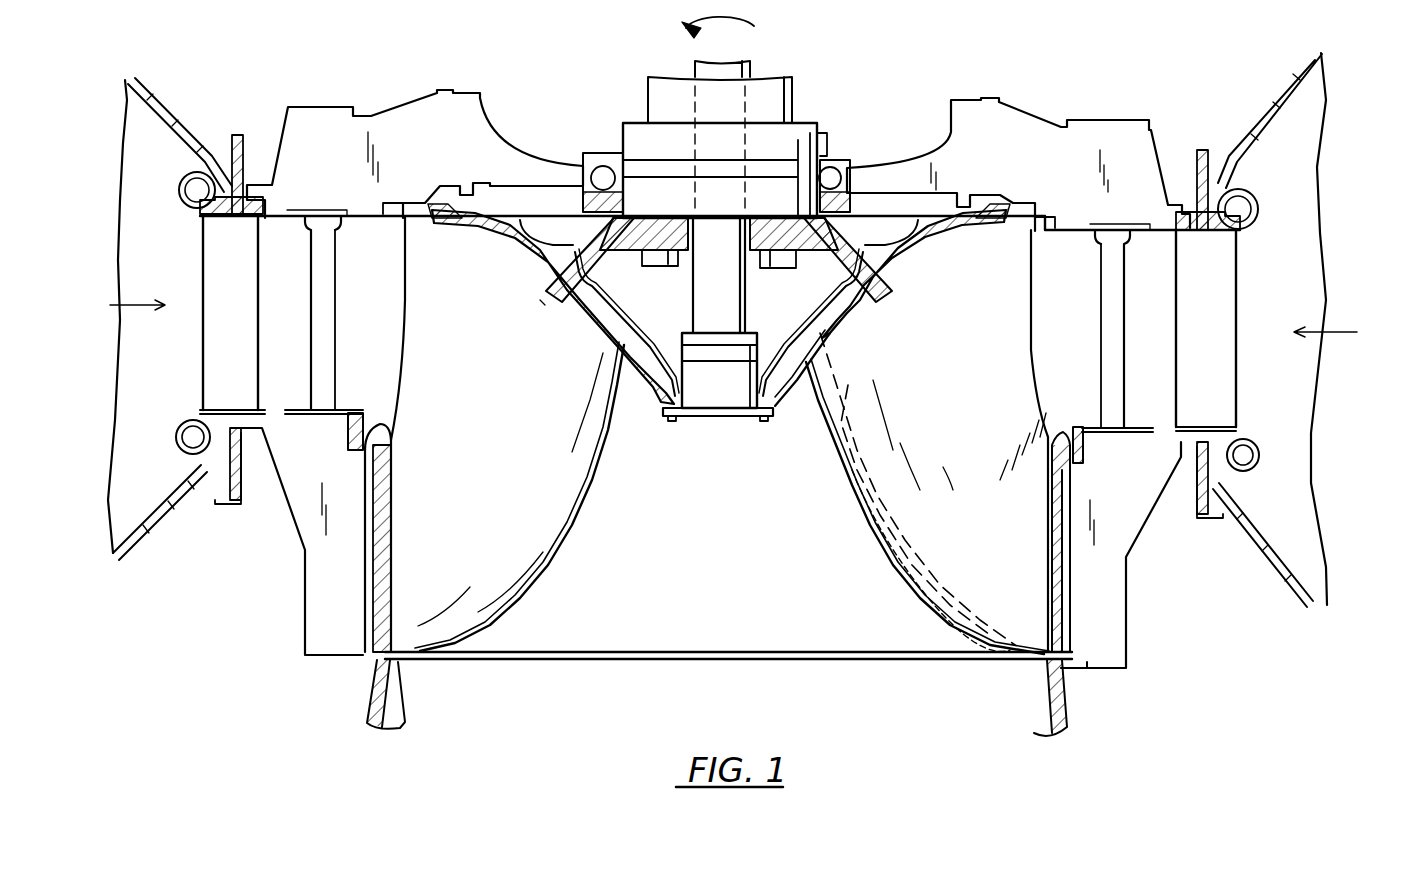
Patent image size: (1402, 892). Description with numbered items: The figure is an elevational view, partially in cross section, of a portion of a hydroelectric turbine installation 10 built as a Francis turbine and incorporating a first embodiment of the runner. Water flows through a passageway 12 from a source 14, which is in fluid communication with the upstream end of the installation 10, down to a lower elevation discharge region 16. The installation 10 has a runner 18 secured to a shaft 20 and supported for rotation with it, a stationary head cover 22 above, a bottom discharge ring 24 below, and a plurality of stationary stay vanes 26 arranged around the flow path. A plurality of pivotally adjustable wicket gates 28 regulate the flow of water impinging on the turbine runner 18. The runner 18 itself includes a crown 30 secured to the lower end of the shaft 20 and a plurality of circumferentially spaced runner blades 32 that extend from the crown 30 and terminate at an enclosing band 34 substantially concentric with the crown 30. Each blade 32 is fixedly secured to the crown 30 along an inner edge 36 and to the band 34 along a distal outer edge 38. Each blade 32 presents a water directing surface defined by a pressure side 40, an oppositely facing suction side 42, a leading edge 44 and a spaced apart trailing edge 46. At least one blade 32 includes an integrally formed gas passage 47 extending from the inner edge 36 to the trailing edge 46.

The hydroelectric turbine installation 10 is at (928, 74).
The passageway 12 is at (745, 575).
The source 14 is at (140, 216).
The discharge region 16 is at (745, 720).
The runner 18 is at (657, 440).
The shaft 20 is at (749, 70).
The stationary head cover 22 is at (355, 127).
The bottom discharge ring 24 is at (305, 548).
The stationary stay vanes 26 is at (213, 354).
The wicket gates 28 is at (313, 322).
The crown 30 is at (903, 258).
The runner blades 32 is at (407, 262).
The enclosing band 34 is at (392, 467).
The inner edge 36 is at (547, 267).
The distal outer edge 38 is at (383, 514).
The pressure side 40 is at (987, 413).
The suction side 42 is at (517, 393).
The leading edge 44 is at (405, 312).
The trailing edge 46 is at (567, 538).
The gas passage 47 is at (848, 385).